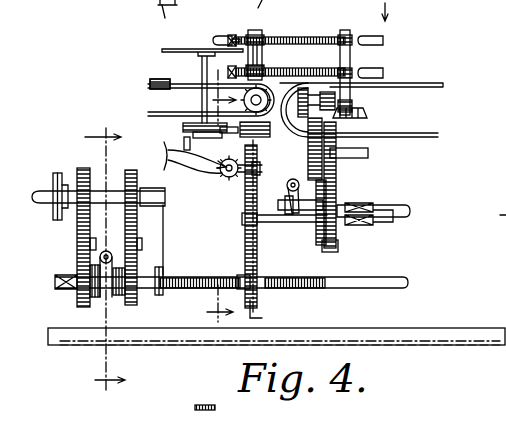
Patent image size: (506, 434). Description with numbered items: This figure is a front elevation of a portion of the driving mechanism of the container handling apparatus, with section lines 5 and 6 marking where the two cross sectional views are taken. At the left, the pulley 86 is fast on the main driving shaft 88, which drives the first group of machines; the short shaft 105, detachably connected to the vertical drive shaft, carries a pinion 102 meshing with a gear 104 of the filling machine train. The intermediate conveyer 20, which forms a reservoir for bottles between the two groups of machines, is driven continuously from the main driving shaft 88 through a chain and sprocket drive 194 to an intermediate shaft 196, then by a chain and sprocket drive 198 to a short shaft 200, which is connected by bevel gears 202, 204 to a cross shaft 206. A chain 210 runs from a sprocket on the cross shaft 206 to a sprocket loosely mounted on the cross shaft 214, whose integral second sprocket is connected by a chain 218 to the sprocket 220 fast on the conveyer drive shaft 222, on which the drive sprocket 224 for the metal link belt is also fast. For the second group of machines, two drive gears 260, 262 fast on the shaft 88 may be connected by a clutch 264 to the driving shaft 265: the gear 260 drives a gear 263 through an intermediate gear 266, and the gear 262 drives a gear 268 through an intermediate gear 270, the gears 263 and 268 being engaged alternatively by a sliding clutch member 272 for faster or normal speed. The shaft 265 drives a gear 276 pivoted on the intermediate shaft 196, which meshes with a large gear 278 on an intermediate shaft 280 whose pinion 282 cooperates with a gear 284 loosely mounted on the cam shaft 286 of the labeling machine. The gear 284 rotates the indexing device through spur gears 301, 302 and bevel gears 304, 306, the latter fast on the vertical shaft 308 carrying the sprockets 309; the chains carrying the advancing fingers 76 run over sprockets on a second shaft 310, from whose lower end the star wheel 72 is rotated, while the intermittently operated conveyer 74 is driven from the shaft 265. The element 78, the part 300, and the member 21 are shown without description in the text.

The section line 5- 5 is at (102, 259).
The section line 6- 6 is at (212, 191).
The intermediate conveyer 20 is at (166, 82).
The frame member 21 is at (497, 216).
The star wheel 72 is at (170, 52).
The intermittently operated conveyer 74 is at (440, 83).
The advancing fingers 76 is at (219, 37).
The belt loop 78 is at (283, 78).
The pulley 86 is at (54, 214).
The main driving shaft 88 is at (50, 192).
The pinion 102 is at (266, 4).
The gear 104 is at (103, 3).
The short shaft 105 is at (162, 18).
The chain and sprocket drive 194 is at (160, 256).
The intermediate shaft 196 is at (185, 290).
The chain and sprocket drive 198 is at (258, 255).
The short shaft 200 is at (233, 176).
The bevel gear 202 is at (177, 155).
The bevel gear 204 is at (175, 166).
The cross shaft 206 is at (183, 126).
The chain 210 is at (340, 172).
The cross shaft 214 is at (338, 193).
The chain 218 is at (340, 126).
The sprocket 220 is at (382, 10).
The conveyer drive shaft 222 is at (150, 86).
The drive sprocket 224 is at (150, 100).
The drive gear 260 is at (80, 167).
The drive gear 262 is at (122, 169).
The gear 263 is at (80, 303).
The clutch 264 is at (98, 315).
The driving shaft 265 is at (68, 280).
The intermediate gear 266 is at (82, 242).
The gear 268 is at (128, 305).
The intermediate gear 270 is at (245, 205).
The clutch member 272 is at (97, 290).
The gear 276 is at (270, 315).
The large gear 278 is at (243, 236).
The intermediate shaft 280 is at (242, 220).
The pinion 282 is at (338, 218).
The gear 284 is at (332, 250).
The cam shaft 286 is at (395, 218).
The link 300 is at (296, 215).
The spur gear 301 is at (370, 149).
The spur gear 302 is at (322, 52).
The bevel gear 304 is at (355, 100).
The bevel gear 306 is at (368, 113).
The vertical shaft 308 is at (352, 30).
The sprocket 309 is at (355, 50).
The second shaft 310 is at (256, 30).